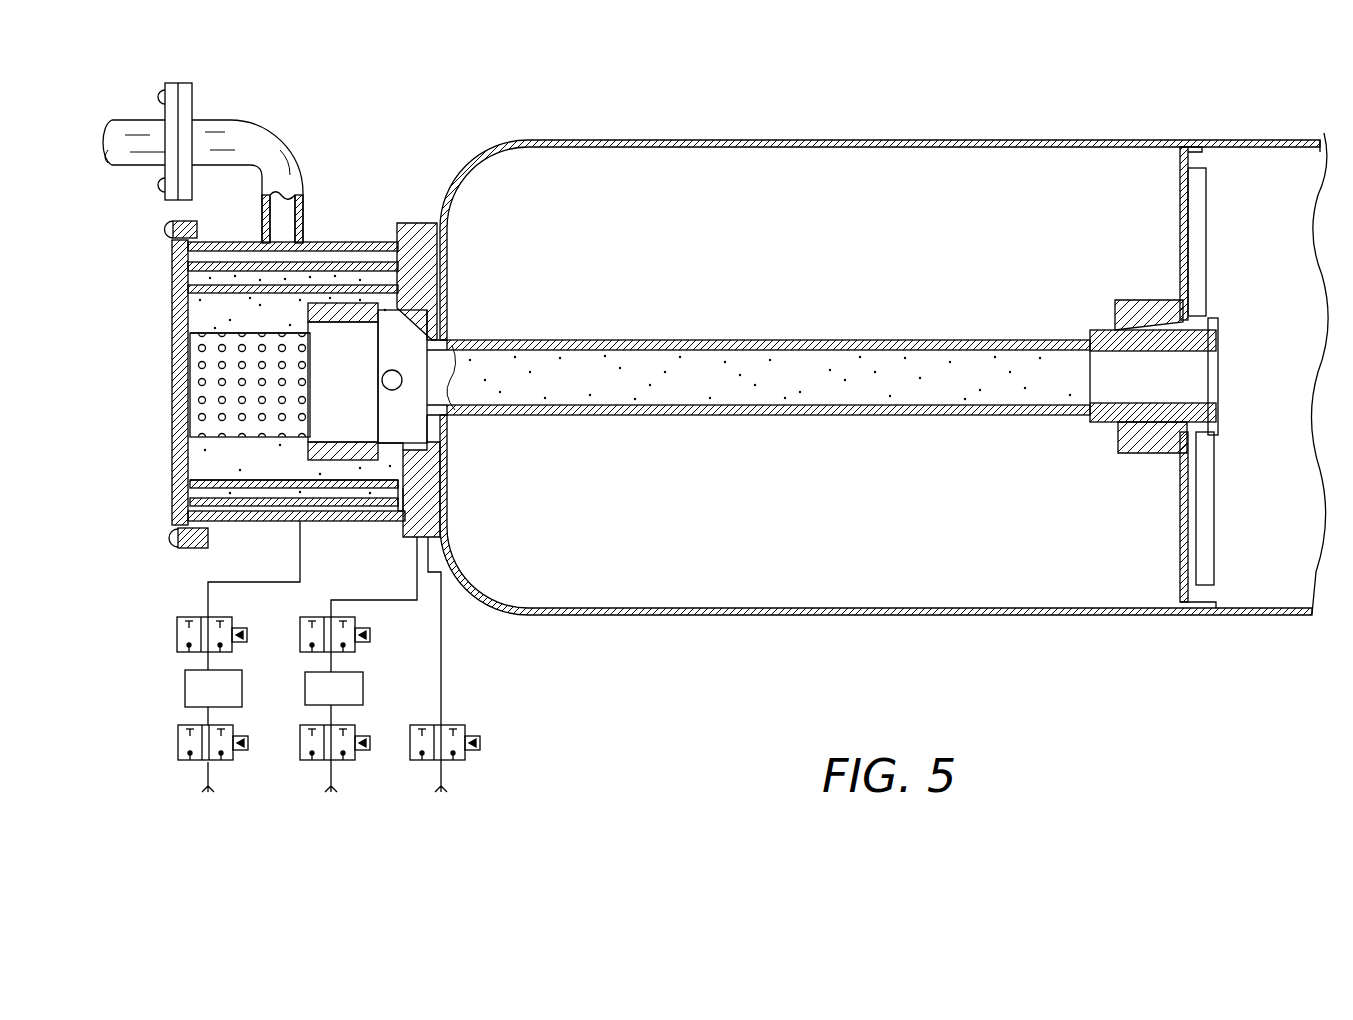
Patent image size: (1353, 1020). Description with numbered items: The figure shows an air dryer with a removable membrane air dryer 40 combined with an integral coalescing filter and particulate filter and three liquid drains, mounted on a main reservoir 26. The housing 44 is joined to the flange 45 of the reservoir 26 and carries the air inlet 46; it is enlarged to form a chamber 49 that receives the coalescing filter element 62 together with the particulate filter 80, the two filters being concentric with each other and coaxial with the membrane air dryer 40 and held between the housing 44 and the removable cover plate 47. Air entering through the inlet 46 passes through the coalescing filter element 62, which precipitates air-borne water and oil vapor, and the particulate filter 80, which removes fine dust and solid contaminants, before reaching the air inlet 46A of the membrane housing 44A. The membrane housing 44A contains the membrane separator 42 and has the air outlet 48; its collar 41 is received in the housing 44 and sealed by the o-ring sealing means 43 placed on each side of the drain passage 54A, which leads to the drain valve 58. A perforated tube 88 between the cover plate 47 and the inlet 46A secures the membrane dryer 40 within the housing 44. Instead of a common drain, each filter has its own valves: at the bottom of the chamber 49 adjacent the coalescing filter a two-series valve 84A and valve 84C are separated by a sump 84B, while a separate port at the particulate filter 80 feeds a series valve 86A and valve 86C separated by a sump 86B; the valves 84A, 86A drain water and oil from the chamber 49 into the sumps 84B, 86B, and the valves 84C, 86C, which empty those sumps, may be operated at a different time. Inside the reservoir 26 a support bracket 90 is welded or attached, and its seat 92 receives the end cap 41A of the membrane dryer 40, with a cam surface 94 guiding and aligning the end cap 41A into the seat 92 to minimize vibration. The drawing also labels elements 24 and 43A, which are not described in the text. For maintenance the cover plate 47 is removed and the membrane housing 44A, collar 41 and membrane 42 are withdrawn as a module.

The piston 24 is at (447, 418).
The main reservoir 26 is at (940, 140).
The membrane air dryer 40 is at (888, 288).
The collar 41 is at (346, 320).
The end cap 41A is at (1100, 425).
The membrane separator 42 is at (966, 355).
The sealing means 43 is at (328, 441).
The retaining plate 43A is at (1212, 418).
The housing 44 is at (406, 222).
The membrane housing 44A is at (684, 338).
The flange 45 is at (190, 513).
The air inlet 46 is at (175, 135).
The air inlet of membrane housing 46A is at (308, 325).
The cover plate 47 is at (180, 408).
The air outlet 48 is at (1220, 356).
The chamber 49 is at (230, 250).
The drain passage 54A is at (403, 378).
The valve 58 is at (467, 755).
The coalescing filter element 62 is at (328, 262).
The particulate filter 80 is at (359, 285).
The valve 84A is at (184, 617).
The sump 84B is at (185, 690).
The valve 84C is at (183, 748).
The valve 86A is at (311, 617).
The sump 86B is at (363, 688).
The valve 86C is at (312, 762).
The perforated tube 88 is at (195, 358).
The support bracket 90 is at (1200, 243).
The seat 92 is at (1160, 452).
The cam surface 94 is at (1115, 318).